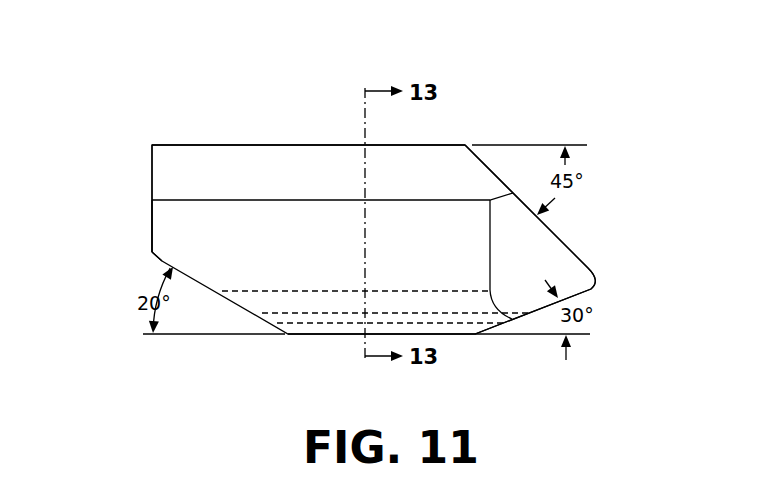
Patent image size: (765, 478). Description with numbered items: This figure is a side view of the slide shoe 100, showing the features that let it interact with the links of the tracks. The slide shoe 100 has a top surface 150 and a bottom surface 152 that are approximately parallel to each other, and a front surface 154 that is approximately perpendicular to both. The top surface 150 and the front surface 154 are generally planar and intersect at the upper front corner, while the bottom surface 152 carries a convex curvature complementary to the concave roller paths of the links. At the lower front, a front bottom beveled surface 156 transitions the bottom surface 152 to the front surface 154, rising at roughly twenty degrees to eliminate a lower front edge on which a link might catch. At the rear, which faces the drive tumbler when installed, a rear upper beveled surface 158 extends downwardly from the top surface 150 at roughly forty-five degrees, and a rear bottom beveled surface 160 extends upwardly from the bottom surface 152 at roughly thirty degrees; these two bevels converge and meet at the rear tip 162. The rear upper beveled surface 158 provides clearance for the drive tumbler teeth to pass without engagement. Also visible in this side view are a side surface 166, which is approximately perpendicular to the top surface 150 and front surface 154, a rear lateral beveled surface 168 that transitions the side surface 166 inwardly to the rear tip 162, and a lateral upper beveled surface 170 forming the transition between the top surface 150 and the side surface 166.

The slide shoe 100 is at (152, 110).
The top surface 150 is at (317, 145).
The lateral upper beveled surface 170 is at (227, 182).
The front surface 154 is at (150, 212).
The side surface 166 is at (165, 223).
The front bottom beveled surface 156 is at (158, 258).
The bottom surface 152 is at (320, 334).
The rear upper beveled surface 158 is at (550, 230).
The rear lateral beveled surface 168 is at (555, 257).
The rear tip 162 is at (592, 280).
The rear bottom beveled surface 160 is at (583, 294).